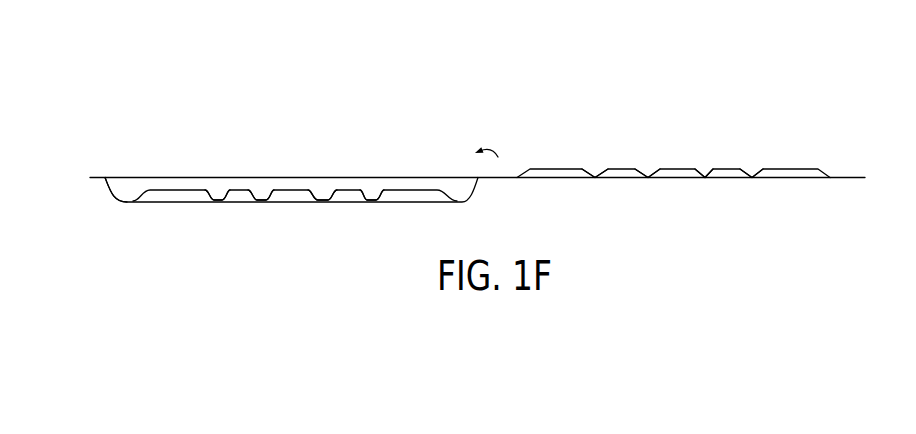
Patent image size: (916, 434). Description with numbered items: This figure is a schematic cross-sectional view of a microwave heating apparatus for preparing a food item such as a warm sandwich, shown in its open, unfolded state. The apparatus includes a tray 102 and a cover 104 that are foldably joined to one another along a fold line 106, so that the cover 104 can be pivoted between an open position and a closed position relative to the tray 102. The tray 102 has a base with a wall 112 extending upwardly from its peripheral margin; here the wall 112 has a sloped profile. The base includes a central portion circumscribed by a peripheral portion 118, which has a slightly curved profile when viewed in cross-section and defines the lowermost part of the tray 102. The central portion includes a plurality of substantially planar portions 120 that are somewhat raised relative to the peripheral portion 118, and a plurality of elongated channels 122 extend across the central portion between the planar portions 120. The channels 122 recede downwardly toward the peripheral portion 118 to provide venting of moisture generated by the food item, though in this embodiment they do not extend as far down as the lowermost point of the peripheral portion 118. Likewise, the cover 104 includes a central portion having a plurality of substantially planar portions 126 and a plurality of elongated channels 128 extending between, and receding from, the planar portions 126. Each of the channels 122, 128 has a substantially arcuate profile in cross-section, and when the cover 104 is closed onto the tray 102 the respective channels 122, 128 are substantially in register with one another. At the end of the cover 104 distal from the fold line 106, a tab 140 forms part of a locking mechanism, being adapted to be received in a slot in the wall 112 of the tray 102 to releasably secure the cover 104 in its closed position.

The tray 102 is at (256, 163).
The cover 104 is at (714, 149).
The fold line 106 is at (487, 192).
The wall 112 is at (119, 199).
The peripheral portion 118 is at (140, 201).
The planar portions 120 is at (169, 189).
The channels 122 is at (218, 202).
The planar portions 126 is at (556, 167).
The channels 128 is at (596, 179).
The tab 140 is at (863, 180).